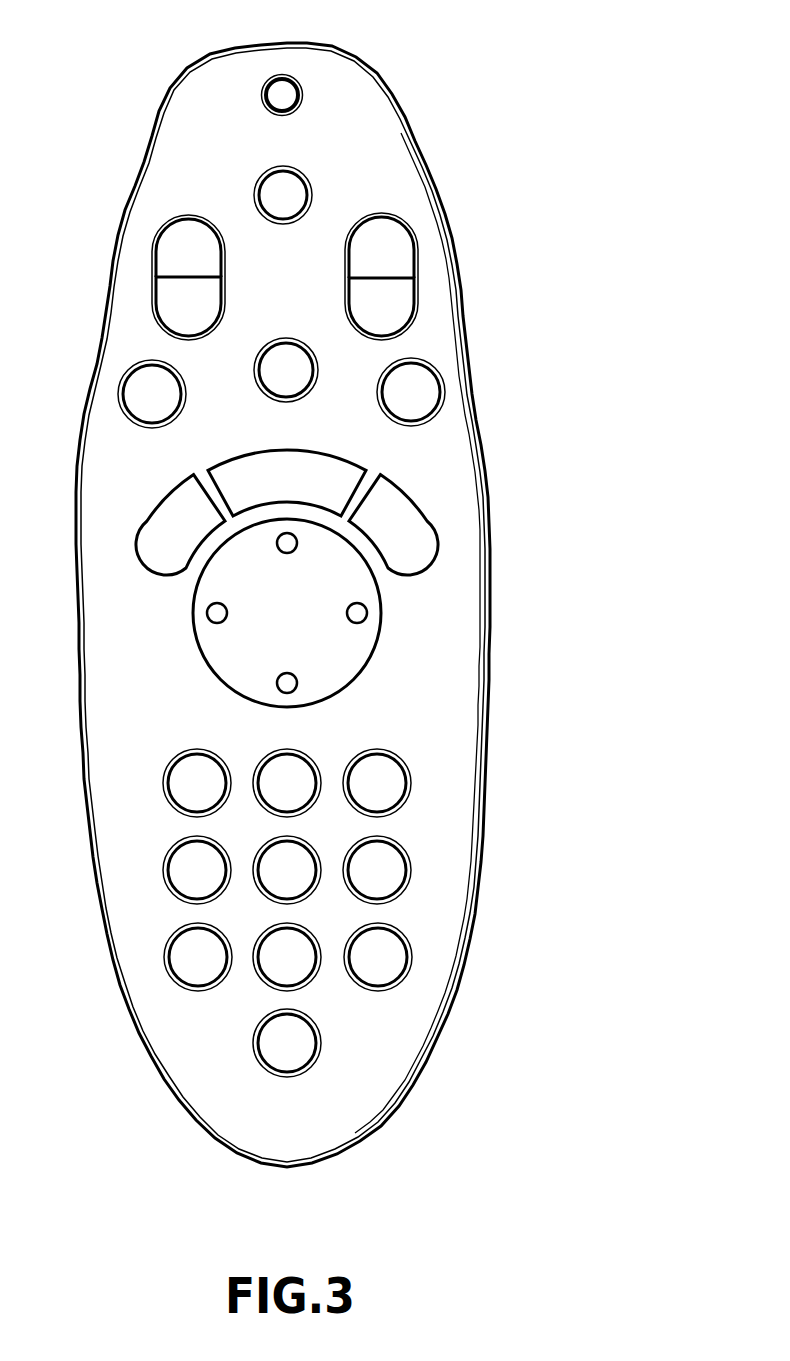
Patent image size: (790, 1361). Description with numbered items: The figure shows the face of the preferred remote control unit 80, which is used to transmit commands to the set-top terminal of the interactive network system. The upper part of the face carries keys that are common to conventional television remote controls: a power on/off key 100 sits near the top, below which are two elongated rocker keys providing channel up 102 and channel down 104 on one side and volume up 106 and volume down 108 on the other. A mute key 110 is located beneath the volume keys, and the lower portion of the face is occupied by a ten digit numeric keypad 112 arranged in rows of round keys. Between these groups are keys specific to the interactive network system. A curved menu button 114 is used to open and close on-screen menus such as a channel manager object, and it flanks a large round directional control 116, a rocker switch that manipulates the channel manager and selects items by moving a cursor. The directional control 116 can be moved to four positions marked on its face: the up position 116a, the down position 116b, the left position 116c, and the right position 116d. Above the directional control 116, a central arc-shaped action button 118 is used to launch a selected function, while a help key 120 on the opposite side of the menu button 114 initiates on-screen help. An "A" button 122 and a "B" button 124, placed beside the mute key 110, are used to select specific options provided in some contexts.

The remote control unit 80 is at (556, 50).
The power on/off key 100 is at (292, 188).
The channel up key 102 is at (388, 243).
The channel down key 104 is at (388, 293).
The volume up key 106 is at (172, 248).
The volume down key 108 is at (163, 292).
The mute key 110 is at (138, 393).
The numeric keypad 112 is at (410, 825).
The menu button 114 is at (170, 528).
The directional control 116 is at (285, 633).
The up position 116a is at (287, 543).
The down position 116b is at (287, 683).
The left position 116c is at (217, 613).
The right position 116d is at (357, 613).
The action button 118 is at (347, 470).
The help key 120 is at (404, 528).
The "A" button 122 is at (288, 350).
The "B" button 124 is at (412, 392).